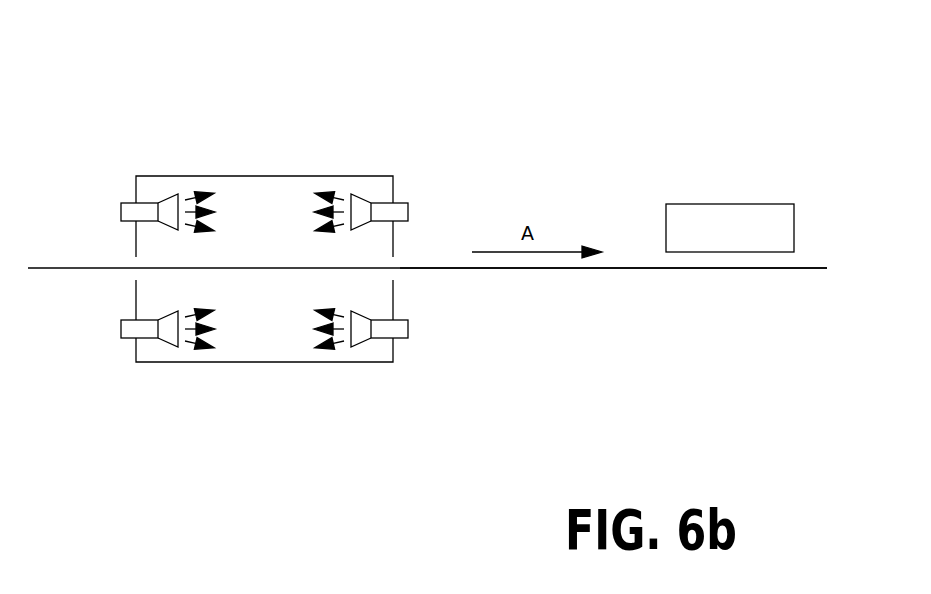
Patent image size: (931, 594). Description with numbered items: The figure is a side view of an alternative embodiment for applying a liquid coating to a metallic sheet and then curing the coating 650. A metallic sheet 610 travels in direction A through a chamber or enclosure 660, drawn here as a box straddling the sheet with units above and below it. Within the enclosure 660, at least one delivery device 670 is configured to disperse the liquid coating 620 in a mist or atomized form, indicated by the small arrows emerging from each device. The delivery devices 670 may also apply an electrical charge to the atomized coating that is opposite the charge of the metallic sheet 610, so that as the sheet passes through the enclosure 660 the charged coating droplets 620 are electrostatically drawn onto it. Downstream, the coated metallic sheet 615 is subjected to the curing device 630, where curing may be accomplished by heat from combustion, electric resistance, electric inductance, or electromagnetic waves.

The metallic sheet 610 is at (112, 267).
The coated metallic sheet 615 is at (500, 269).
The liquid coating 620 is at (339, 200).
The curing device 630 is at (731, 203).
The alternative embodiment for applying a liquid coating and curing the coating 650 is at (242, 68).
The chamber or enclosure 660 is at (183, 176).
The delivery device 670 is at (122, 325).